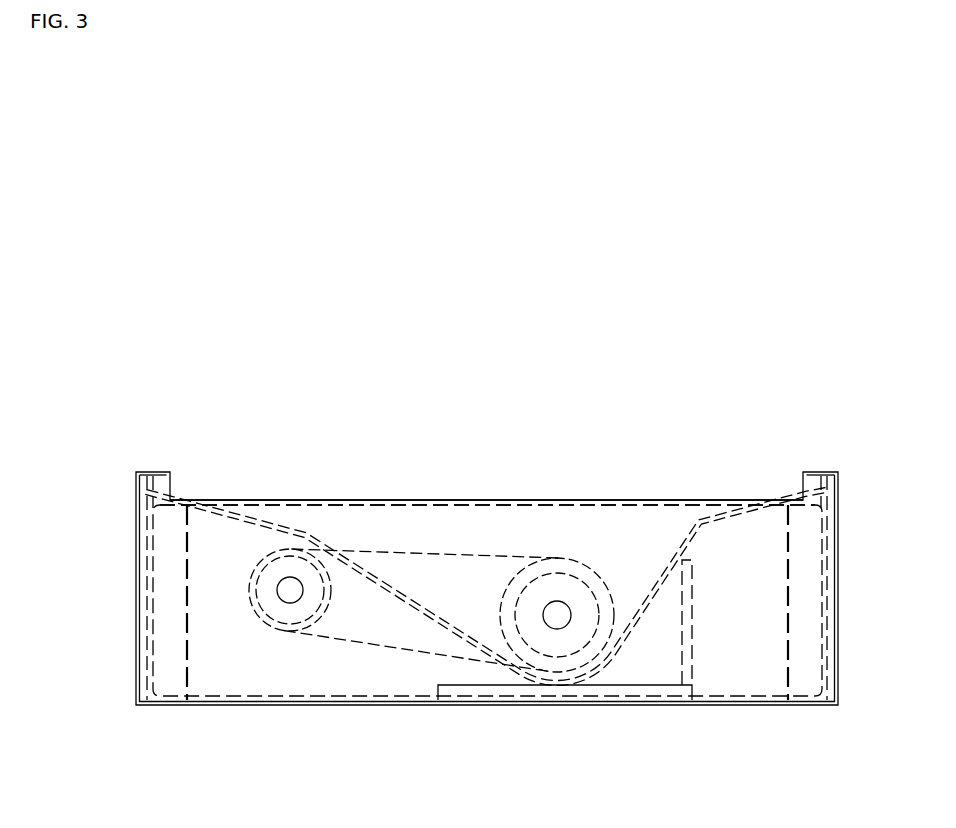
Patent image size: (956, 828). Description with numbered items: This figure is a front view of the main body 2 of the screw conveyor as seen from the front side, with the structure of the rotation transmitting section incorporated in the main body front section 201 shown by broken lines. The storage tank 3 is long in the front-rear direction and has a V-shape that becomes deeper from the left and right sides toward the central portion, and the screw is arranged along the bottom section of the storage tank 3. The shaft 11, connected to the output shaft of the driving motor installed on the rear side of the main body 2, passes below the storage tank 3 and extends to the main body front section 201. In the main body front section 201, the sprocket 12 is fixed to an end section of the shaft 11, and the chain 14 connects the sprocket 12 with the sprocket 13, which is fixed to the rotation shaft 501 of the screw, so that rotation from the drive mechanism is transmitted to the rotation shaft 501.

The main body 2 is at (370, 500).
The main body front section 201 is at (487, 532).
The storage tank 3 is at (668, 585).
The shaft 11 is at (290, 578).
The sprocket 12 is at (270, 622).
The sprocket 13 is at (522, 642).
The chain 14 is at (385, 646).
The rotation shaft 501 is at (569, 627).